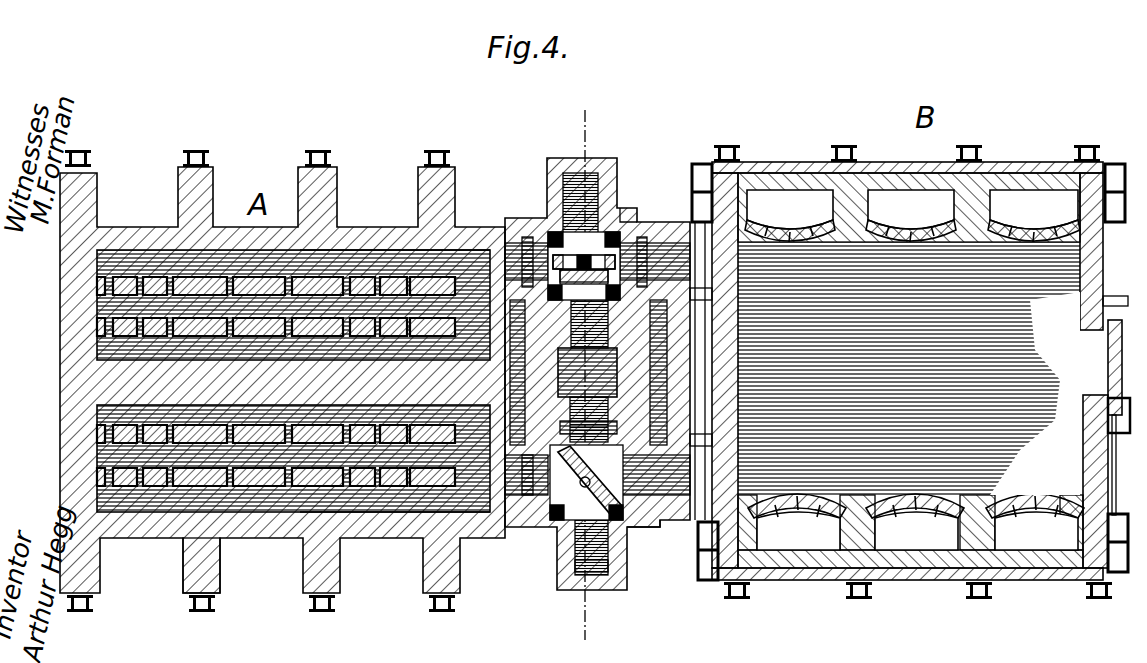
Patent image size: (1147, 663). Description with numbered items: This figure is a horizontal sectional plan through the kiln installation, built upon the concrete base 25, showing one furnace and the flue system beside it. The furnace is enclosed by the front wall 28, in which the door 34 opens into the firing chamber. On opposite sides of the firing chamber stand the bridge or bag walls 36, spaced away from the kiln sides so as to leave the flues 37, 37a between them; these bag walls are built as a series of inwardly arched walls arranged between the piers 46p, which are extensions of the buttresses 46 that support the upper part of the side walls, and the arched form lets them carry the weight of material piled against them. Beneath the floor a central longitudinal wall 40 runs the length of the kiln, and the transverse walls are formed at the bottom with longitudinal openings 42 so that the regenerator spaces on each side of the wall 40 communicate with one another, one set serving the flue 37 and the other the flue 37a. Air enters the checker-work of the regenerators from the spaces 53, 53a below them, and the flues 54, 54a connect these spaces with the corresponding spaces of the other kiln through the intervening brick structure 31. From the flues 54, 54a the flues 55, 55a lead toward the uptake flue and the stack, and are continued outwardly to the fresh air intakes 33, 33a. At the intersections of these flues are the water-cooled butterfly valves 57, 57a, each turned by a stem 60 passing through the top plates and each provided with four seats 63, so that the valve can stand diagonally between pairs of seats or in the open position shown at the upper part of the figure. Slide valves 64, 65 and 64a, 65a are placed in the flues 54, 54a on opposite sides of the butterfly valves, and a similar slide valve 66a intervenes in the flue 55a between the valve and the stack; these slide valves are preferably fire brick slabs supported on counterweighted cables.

The concrete base 25 is at (909, 368).
The front wall 28 is at (62, 452).
The brick structure 31 is at (645, 290).
The fresh air intake 33 is at (583, 178).
The fresh air intake 33a is at (583, 565).
The door 34 is at (1108, 368).
The bridge wall 36 is at (915, 245).
The flue 37 is at (909, 207).
The flue 37a is at (935, 540).
The central longitudinal wall 40 is at (310, 385).
The longitudinal opening 42 is at (156, 302).
The buttress 46 is at (185, 549).
The pier 46p is at (857, 197).
The space 53 is at (384, 256).
The space 53a is at (385, 515).
The flue 54 is at (482, 246).
The flue 54a is at (520, 500).
The flue 55 is at (525, 320).
The flue 55a is at (520, 410).
The water-cooled butterfly valve 57 is at (560, 264).
The water-cooled butterfly valve 57a is at (597, 568).
The stem 60 is at (587, 365).
The seat 63 is at (560, 234).
The slide valve 64 is at (508, 268).
The slide valve 64a is at (512, 490).
The slide valve 65 is at (638, 220).
The slide valve 65a is at (664, 522).
The slide valve 66a is at (594, 482).